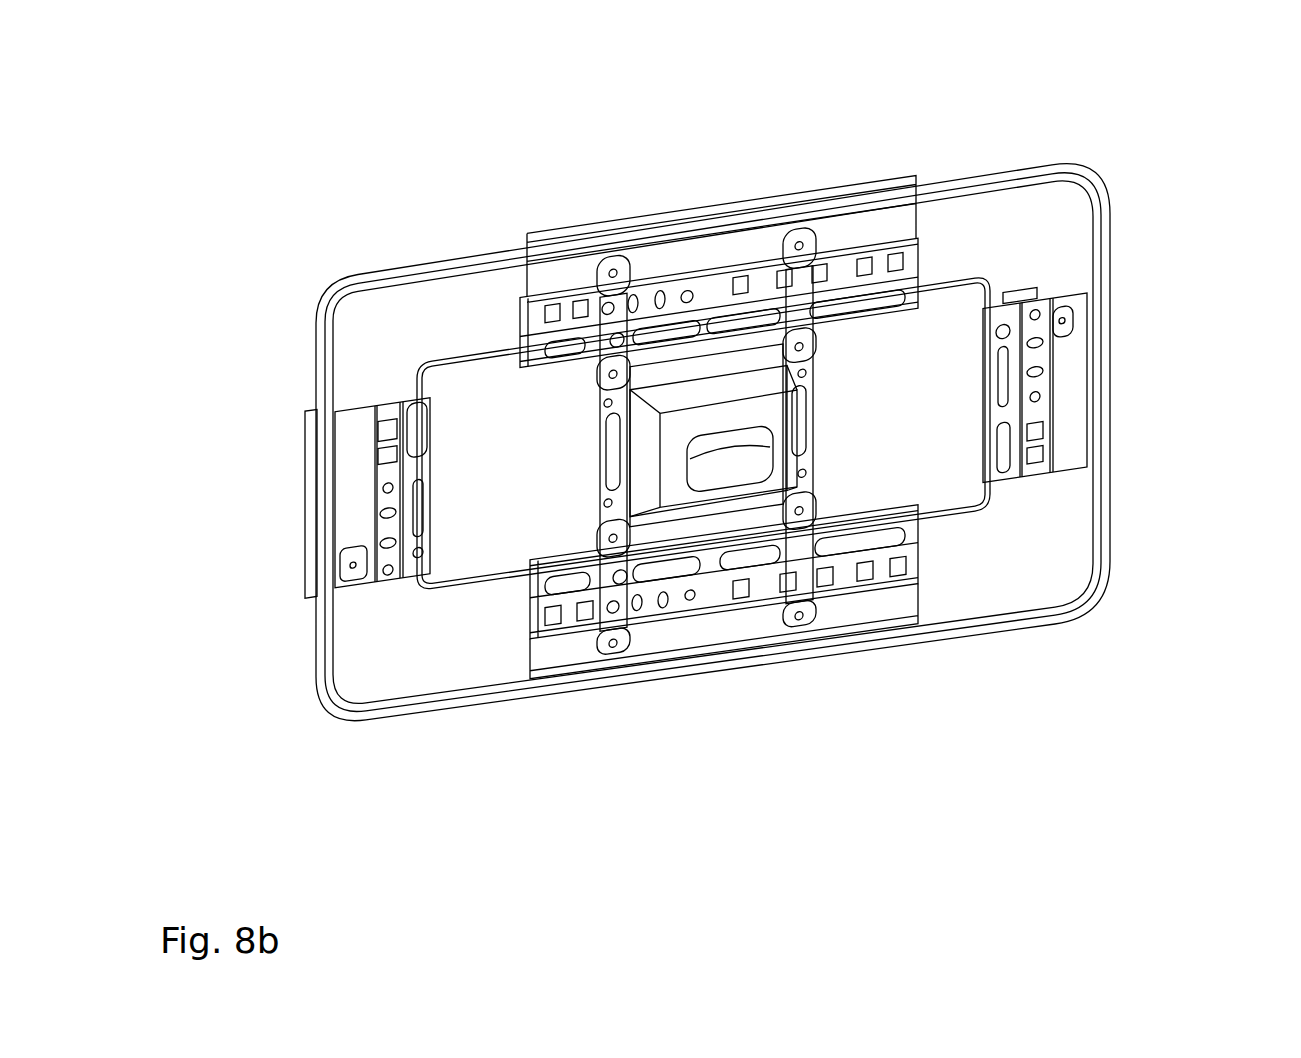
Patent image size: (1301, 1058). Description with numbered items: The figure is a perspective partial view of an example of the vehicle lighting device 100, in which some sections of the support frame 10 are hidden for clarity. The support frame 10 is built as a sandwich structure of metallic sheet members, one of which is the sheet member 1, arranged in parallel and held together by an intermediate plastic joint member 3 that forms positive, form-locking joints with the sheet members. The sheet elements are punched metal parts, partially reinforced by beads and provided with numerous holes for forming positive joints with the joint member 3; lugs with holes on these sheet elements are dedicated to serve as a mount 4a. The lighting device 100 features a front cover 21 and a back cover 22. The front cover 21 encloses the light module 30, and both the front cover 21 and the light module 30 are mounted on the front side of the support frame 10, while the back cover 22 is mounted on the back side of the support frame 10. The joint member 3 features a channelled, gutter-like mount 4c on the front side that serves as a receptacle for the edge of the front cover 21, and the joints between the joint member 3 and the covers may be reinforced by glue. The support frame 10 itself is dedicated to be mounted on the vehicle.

The vehicle lighting device 100 is at (727, 447).
The support frame 10 is at (504, 310).
The first sheet member 1 is at (1079, 325).
The joint member 3 is at (1075, 394).
The light module 30 is at (760, 455).
The mount 4a is at (602, 374).
The gutter-like mount 4c is at (913, 652).
The front cover 21 is at (315, 667).
The back cover 22 is at (421, 599).